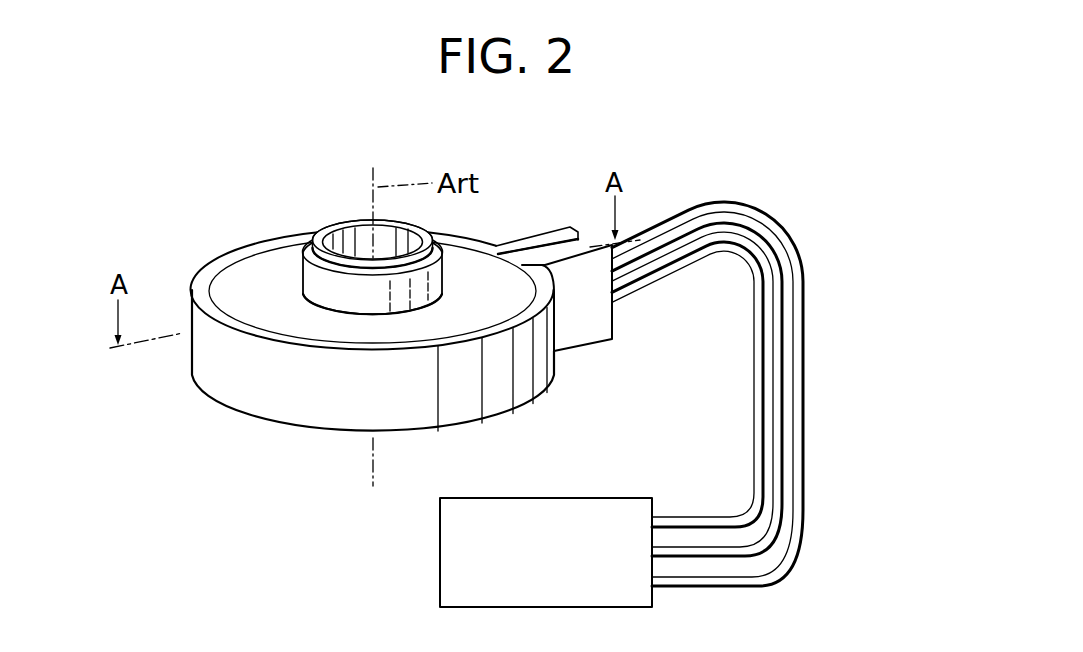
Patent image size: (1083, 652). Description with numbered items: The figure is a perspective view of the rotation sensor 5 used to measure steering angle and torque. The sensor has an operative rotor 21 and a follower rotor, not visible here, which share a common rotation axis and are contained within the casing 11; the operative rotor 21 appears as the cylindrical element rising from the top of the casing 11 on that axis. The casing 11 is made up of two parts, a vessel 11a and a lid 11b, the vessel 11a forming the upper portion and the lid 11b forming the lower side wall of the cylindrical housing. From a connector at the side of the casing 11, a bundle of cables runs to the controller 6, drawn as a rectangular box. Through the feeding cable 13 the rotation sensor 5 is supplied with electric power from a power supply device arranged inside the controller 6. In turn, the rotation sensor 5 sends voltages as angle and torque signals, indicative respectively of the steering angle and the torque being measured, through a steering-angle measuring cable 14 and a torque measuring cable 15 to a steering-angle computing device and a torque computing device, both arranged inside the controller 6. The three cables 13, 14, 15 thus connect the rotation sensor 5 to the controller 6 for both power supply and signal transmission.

The rotation sensor 5 is at (494, 214).
The controller 6 is at (510, 496).
The casing 11 is at (229, 239).
The vessel 11a is at (275, 262).
The lid 11b is at (283, 408).
The feeding cable 13 is at (803, 389).
The steering-angle measuring cable 14 is at (782, 418).
The torque measuring cable 15 is at (756, 351).
The operative rotor 21 is at (328, 232).